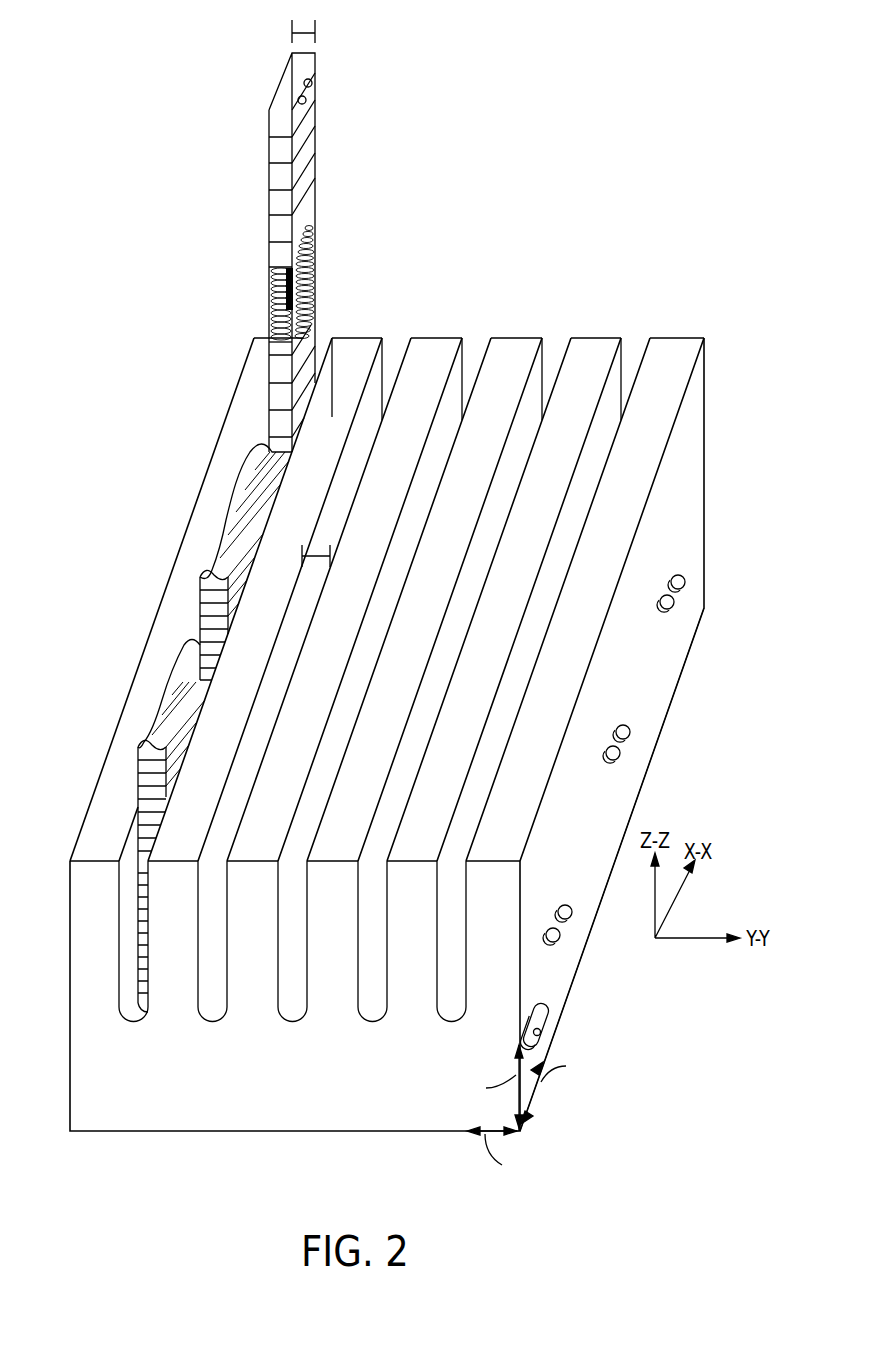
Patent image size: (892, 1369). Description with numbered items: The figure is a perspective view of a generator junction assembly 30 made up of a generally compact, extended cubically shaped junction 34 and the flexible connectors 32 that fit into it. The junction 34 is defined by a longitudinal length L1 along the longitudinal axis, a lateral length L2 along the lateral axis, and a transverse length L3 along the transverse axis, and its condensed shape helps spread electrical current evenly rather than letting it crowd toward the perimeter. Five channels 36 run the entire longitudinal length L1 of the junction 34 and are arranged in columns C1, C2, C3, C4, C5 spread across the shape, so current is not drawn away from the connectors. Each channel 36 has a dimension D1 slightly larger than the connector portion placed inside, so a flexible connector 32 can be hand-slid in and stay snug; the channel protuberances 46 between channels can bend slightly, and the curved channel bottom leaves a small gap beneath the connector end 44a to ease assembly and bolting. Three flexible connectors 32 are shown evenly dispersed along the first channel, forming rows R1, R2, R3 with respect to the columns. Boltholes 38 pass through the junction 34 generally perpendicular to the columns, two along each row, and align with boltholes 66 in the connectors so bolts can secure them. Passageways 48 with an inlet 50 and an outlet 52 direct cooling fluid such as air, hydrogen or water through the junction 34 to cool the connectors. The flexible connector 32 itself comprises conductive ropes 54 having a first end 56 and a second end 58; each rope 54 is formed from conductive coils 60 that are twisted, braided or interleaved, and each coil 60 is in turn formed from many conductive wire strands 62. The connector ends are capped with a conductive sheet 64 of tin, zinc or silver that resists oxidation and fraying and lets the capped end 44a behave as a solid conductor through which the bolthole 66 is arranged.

The junction assembly 30 is at (615, 158).
The flexible connector 32 is at (262, 90).
The junction 34 is at (696, 685).
The channel 36 is at (553, 340).
The bolthole 38 is at (676, 603).
The end of the flexible connector 44a is at (288, 2).
The channel protuberance 46 is at (173, 925).
The passageway 48 is at (541, 1033).
The inlet 50 is at (70, 1048).
The outlet 52 is at (549, 1010).
The conductive rope 54 is at (314, 264).
The first end 56 is at (316, 72).
The second end 58 is at (140, 1002).
The conductive coil 60 is at (270, 291).
The wire strand 62 is at (270, 319).
The conductive sheet 64 is at (269, 155).
The bolthole 66 is at (317, 115).
The column C1 is at (322, 352).
The column C2 is at (393, 352).
The column C3 is at (472, 352).
The column C4 is at (557, 352).
The column C5 is at (633, 352).
The row R1 is at (239, 383).
The row R2 is at (181, 546).
The row R3 is at (122, 712).
The channel dimension D1 is at (316, 550).
The longitudinal length L1 is at (579, 963).
The lateral length L2 is at (432, 1134).
The transverse length L3 is at (516, 1038).